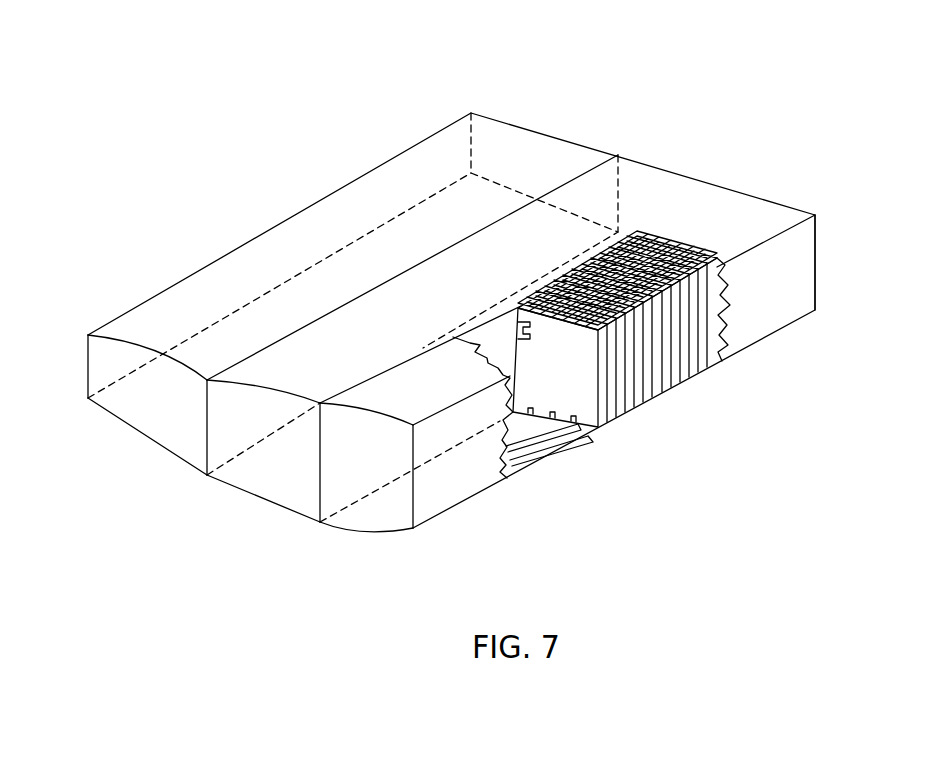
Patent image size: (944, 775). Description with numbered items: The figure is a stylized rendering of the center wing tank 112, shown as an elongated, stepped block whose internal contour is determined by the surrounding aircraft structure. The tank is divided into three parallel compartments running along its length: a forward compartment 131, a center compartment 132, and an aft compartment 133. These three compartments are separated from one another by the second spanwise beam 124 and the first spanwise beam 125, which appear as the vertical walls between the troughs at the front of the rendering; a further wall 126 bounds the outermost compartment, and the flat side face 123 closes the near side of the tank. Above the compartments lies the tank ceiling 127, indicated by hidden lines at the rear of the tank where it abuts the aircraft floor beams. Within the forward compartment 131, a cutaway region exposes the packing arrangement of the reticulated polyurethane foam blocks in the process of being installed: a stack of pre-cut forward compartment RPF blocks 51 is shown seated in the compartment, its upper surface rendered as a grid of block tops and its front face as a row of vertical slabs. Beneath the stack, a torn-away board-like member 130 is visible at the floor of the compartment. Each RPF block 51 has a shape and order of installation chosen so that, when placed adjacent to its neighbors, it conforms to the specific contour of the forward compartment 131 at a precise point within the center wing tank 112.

The center wing tank 112 is at (630, 68).
The side face of housing 123 is at (800, 278).
The spanwise beam #2 124 is at (318, 485).
The spanwise beam #1 125 is at (205, 443).
The wall 126 is at (88, 367).
The tank ceiling 127 is at (627, 210).
The circuit board 130 is at (542, 448).
The forward compartment 131 is at (367, 522).
The center compartment 132 is at (270, 478).
The aft compartment 133 is at (163, 427).
The forward compartment RPF block 51 is at (577, 395).